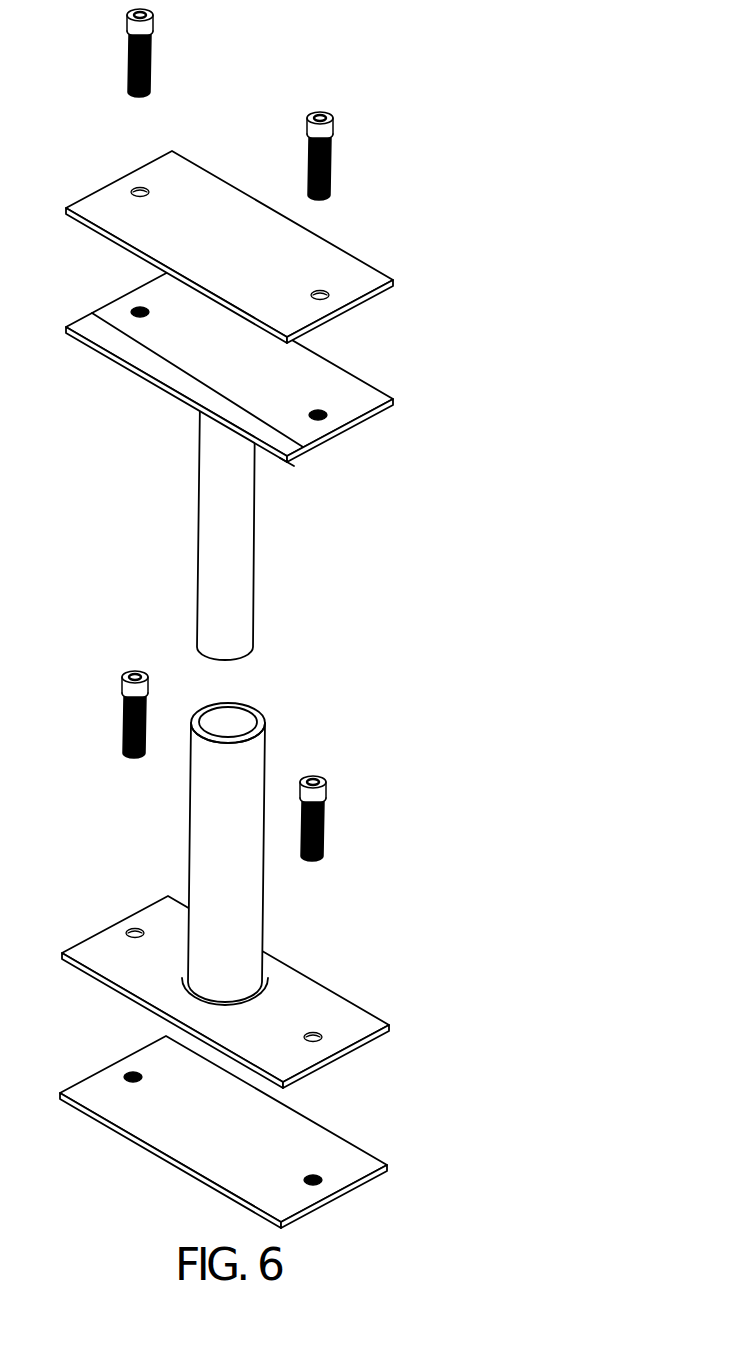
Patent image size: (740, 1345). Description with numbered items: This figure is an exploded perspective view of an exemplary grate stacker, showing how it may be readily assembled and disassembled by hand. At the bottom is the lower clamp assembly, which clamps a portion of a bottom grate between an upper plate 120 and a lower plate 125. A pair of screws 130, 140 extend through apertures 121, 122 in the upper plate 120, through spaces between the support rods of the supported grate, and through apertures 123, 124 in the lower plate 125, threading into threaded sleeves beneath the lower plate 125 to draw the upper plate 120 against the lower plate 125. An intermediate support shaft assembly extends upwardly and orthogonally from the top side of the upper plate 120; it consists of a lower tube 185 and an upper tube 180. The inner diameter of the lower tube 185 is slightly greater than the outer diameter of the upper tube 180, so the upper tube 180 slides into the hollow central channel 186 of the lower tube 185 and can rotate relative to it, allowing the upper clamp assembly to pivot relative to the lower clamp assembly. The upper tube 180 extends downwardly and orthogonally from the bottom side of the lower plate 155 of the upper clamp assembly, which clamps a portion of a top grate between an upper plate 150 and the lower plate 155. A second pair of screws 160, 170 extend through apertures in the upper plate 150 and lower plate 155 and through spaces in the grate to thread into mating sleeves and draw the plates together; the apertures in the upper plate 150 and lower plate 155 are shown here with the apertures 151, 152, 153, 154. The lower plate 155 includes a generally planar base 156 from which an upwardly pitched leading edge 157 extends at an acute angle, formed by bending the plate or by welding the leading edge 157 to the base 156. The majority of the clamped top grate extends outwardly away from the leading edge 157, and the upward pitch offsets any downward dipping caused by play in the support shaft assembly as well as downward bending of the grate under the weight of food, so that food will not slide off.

The upper plate 120 is at (327, 992).
The aperture 121 is at (133, 932).
The aperture 122 is at (312, 1037).
The aperture 123 is at (130, 1077).
The aperture 124 is at (322, 1182).
The lower plate 125 is at (348, 1155).
The screw 130 is at (328, 783).
The screw 140 is at (123, 690).
The upper plate 150 is at (350, 273).
The hole 151 is at (140, 192).
The hole 152 is at (318, 290).
The threaded hole 153 is at (140, 310).
The threaded hole 154 is at (325, 408).
The lower plate 155 is at (370, 392).
The generally planar base 156 is at (352, 413).
The upwardly pitched leading edge 157 is at (300, 447).
The screw 160 is at (333, 128).
The screw 170 is at (155, 23).
The upper tube 180 is at (202, 545).
The lower tube 185 is at (198, 835).
The hollow central channel 186 is at (237, 720).